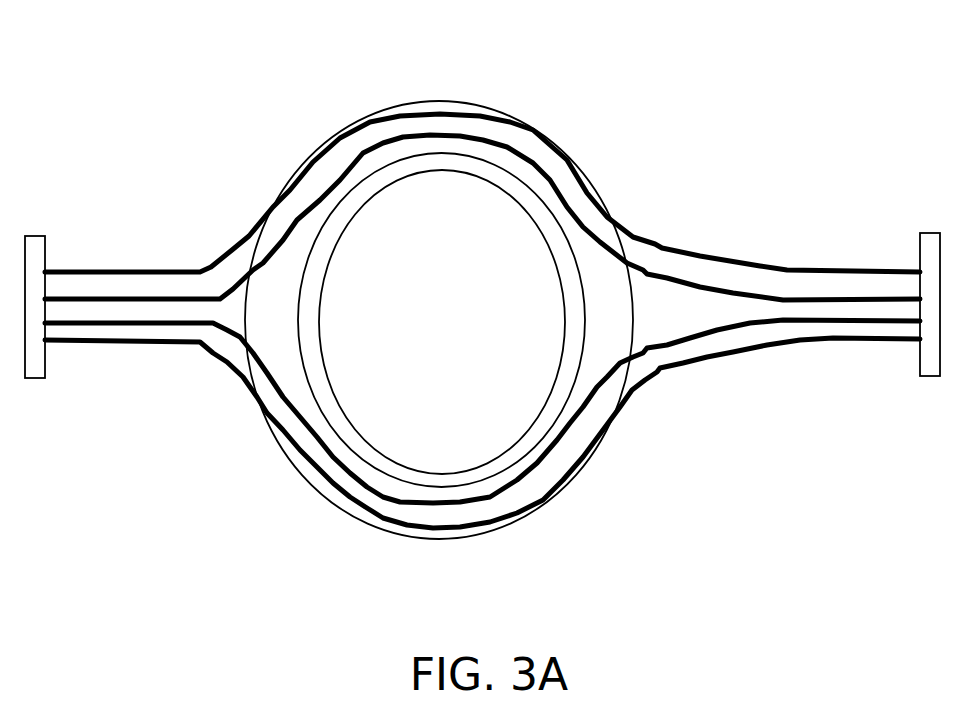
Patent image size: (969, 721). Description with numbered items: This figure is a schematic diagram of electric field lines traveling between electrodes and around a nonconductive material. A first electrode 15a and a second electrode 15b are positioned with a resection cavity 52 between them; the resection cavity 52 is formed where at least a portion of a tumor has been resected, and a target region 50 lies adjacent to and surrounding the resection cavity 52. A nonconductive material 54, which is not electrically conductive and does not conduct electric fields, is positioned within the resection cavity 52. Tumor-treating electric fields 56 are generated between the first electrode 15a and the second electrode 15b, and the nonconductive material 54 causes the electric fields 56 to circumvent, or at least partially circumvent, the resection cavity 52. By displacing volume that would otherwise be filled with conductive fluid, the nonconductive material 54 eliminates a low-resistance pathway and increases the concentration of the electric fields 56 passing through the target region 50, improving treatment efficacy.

The target region 50 is at (442, 105).
The resection cavity 52 is at (355, 195).
The nonconductive material 54 is at (450, 334).
The tumor-treating electric fields 56 is at (530, 476).
The first electrode 15a is at (46, 246).
The second electrode 15b is at (918, 258).